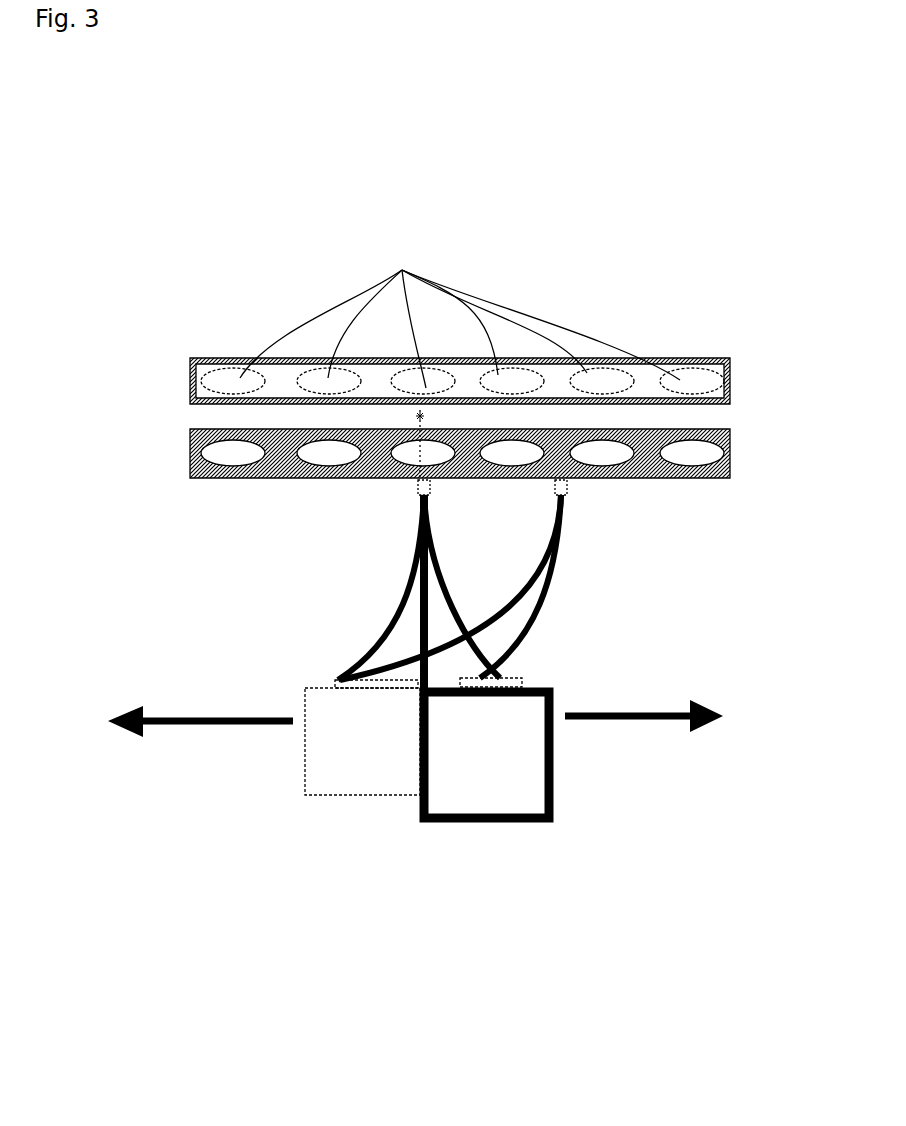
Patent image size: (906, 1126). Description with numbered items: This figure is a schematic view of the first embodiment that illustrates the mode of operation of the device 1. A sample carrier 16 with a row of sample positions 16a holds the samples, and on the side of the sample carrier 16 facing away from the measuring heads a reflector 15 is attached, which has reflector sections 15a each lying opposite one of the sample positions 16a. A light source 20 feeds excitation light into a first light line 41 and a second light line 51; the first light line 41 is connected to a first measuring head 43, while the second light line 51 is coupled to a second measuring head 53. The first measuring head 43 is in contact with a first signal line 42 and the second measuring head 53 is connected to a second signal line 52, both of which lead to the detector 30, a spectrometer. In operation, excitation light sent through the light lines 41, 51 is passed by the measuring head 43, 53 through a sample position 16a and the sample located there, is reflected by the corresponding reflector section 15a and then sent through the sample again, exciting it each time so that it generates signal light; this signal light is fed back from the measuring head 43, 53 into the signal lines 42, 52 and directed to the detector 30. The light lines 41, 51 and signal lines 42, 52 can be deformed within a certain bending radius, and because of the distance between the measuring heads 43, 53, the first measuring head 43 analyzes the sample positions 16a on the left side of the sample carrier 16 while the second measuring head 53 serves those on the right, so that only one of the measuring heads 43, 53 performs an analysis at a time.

The device 1 is at (704, 160).
The reflector 15 is at (690, 358).
The reflector sections 15a is at (462, 356).
The sample carrier 16 is at (727, 430).
The sample positions 16a is at (337, 458).
The light source 20 is at (365, 767).
The detector 30 is at (493, 782).
The first light line 41 is at (390, 640).
The first signal line 42 is at (413, 587).
The first measuring head 43 is at (418, 488).
The second light line 51 is at (520, 600).
The second signal line 52 is at (527, 653).
The second measuring head 53 is at (567, 490).